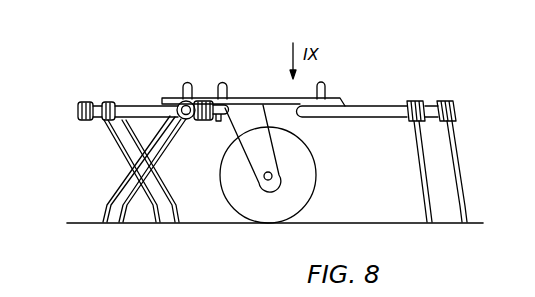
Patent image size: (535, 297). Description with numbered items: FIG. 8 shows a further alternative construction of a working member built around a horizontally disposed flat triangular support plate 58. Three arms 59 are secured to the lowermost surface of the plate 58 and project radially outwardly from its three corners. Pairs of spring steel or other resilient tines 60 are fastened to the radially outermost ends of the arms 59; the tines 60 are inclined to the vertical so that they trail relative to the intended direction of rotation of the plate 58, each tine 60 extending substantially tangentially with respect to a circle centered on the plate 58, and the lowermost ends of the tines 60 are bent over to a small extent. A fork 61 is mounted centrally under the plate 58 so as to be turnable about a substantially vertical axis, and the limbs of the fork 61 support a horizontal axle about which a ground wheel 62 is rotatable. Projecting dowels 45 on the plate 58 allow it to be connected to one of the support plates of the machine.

The projecting dowels 45 is at (224, 85).
The support plate 58 is at (266, 76).
The arms 59 is at (138, 108).
The resilient tines 60 is at (127, 160).
The fork 61 is at (255, 160).
The ground wheel 62 is at (315, 168).